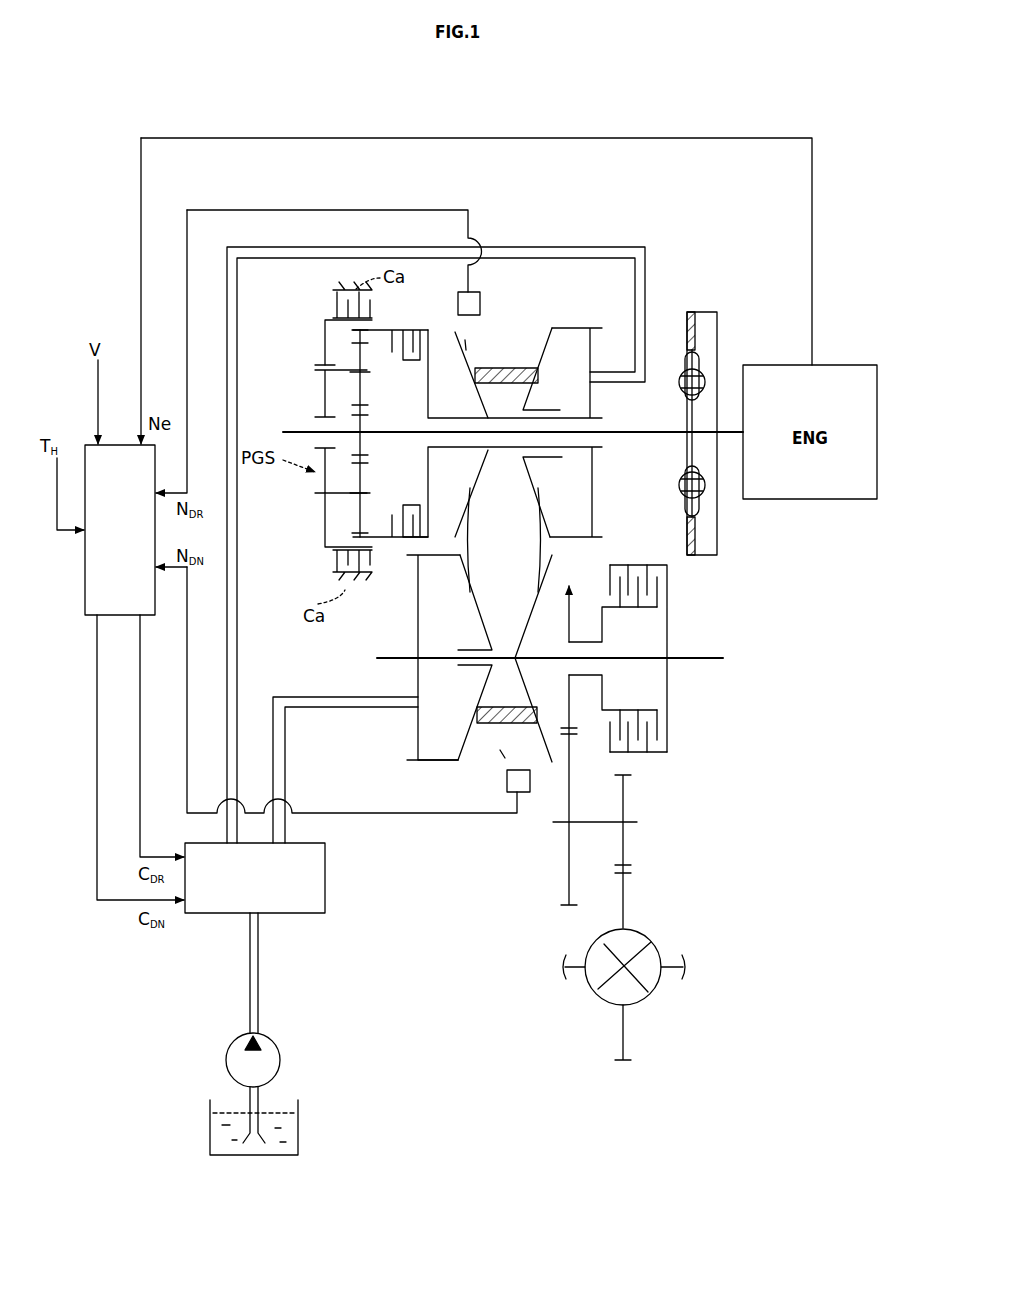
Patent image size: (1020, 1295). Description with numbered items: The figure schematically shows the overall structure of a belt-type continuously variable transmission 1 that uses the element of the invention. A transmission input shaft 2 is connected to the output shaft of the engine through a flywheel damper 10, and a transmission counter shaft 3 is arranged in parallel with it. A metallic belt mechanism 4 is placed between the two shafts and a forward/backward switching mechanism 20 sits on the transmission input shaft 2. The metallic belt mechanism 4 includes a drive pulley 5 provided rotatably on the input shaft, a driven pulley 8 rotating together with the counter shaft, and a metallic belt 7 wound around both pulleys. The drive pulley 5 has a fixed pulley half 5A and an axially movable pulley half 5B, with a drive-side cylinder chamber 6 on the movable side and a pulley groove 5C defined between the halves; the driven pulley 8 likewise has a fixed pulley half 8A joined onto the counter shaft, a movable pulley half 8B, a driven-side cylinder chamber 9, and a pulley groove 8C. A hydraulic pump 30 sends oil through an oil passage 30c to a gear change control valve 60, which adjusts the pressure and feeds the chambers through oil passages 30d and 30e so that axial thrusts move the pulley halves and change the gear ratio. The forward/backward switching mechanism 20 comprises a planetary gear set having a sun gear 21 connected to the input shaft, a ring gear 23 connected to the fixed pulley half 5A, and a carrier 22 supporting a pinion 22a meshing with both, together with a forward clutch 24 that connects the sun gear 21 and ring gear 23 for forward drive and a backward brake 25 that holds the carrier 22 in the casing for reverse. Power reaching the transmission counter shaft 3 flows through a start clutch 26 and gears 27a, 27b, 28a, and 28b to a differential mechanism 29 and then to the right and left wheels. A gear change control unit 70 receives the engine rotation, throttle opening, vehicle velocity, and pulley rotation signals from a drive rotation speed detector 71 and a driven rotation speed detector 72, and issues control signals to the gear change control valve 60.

The belt-type continuously variable transmission 1 is at (641, 131).
The transmission input shaft 2 is at (298, 432).
The transmission counter shaft 3 is at (377, 660).
The metallic belt mechanism 4 is at (457, 684).
The drive pulley 5 is at (519, 352).
The fixed pulley half 5A is at (468, 345).
The movable pulley half 5B is at (576, 328).
The pulley groove 5C is at (472, 352).
The drive-side cylinder chamber 6 is at (568, 381).
The metallic belt 7 is at (506, 547).
The driven pulley 8 is at (467, 684).
The fixed pulley half 8A is at (530, 702).
The movable pulley half 8B is at (420, 762).
The pulley groove 8C is at (500, 740).
The driven-side cylinder chamber 9 is at (445, 711).
The flywheel damper 10 is at (703, 312).
The forward/backward switching mechanism 20 is at (349, 431).
The sun gear 21 is at (360, 412).
The carrier 22 is at (320, 340).
The pinion 22a is at (360, 502).
The ring gear 23 is at (335, 525).
The forward clutch 24 is at (406, 330).
The backward brake 25 is at (333, 561).
The start clutch 26 is at (667, 638).
The gear 27a is at (565, 586).
The gear 27b is at (567, 908).
The gear 28a is at (628, 778).
The gear 28b is at (622, 1062).
The differential mechanism 29 is at (653, 992).
The hydraulic pump 30 is at (282, 1060).
The oil passage 30c is at (262, 982).
The oil passage 30d is at (606, 247).
The oil passage 30e is at (344, 708).
The gear change control valve 60 is at (326, 895).
The gear change control unit 70 is at (85, 614).
The drive rotation speed detector 71 is at (480, 305).
The driven rotation speed detector 72 is at (530, 780).